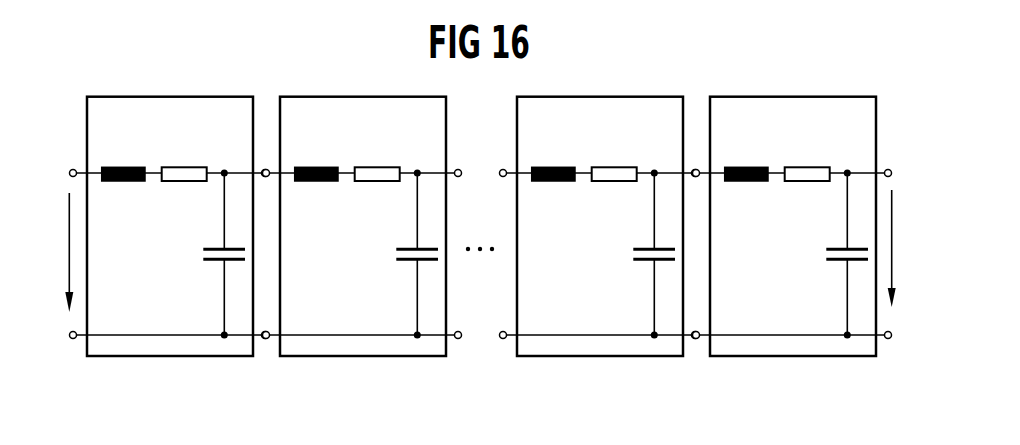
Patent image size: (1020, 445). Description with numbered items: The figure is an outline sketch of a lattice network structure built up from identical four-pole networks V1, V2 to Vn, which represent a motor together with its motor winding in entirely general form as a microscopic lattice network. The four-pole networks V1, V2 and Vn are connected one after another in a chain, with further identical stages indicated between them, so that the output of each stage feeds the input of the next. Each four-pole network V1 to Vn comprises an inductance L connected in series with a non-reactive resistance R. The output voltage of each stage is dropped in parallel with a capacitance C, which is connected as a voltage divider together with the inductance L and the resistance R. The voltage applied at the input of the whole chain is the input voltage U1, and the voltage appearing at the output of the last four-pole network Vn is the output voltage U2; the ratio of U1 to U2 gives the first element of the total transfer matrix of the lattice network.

The inductance L is at (435, 145).
The non-reactive resistance R is at (496, 145).
The capacitance C is at (516, 248).
The four-pole network V1 is at (168, 358).
The four-pole network V2 is at (361, 358).
The four-pole network Vn is at (798, 358).
The input voltage U1 is at (53, 252).
The output voltage U2 is at (907, 248).